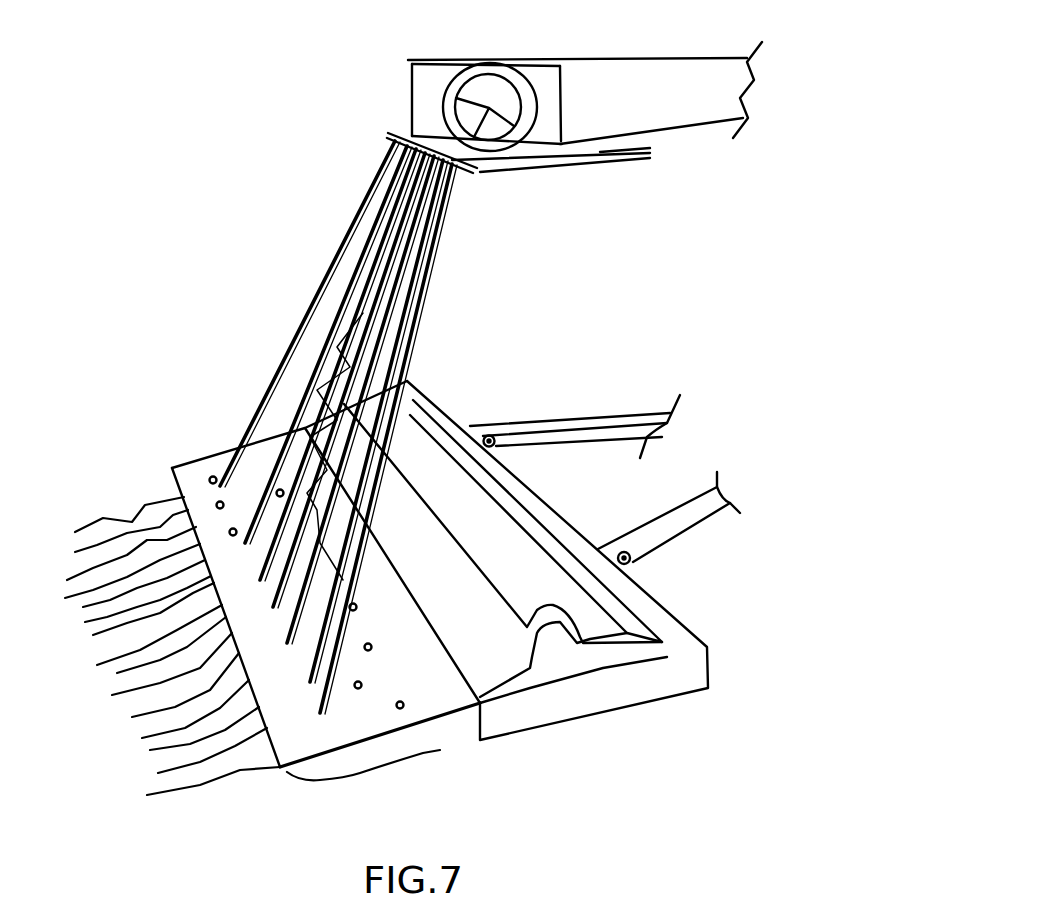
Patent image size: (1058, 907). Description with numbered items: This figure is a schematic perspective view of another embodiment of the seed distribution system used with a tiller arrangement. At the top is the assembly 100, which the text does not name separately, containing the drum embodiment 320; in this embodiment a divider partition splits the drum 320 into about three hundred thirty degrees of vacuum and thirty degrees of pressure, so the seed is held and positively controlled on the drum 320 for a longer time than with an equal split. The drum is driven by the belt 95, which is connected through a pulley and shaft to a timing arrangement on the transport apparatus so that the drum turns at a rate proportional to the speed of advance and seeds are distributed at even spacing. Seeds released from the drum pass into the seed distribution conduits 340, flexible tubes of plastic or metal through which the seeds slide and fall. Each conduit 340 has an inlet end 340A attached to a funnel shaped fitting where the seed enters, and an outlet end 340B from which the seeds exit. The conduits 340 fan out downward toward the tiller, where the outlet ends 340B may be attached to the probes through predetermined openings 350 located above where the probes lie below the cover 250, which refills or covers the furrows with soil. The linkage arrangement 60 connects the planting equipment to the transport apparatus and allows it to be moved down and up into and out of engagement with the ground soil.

The optical print head assembly 100 is at (401, 96).
The drum embodiment 320 is at (412, 102).
The belt 95 is at (700, 57).
The inlet end 340A is at (453, 156).
The seed distribution conduits 340 is at (423, 308).
The outlet end 340B is at (312, 507).
The linkage arrangement 60 is at (655, 515).
The seed covering means 250 is at (427, 697).
The predetermined openings 350 is at (358, 690).